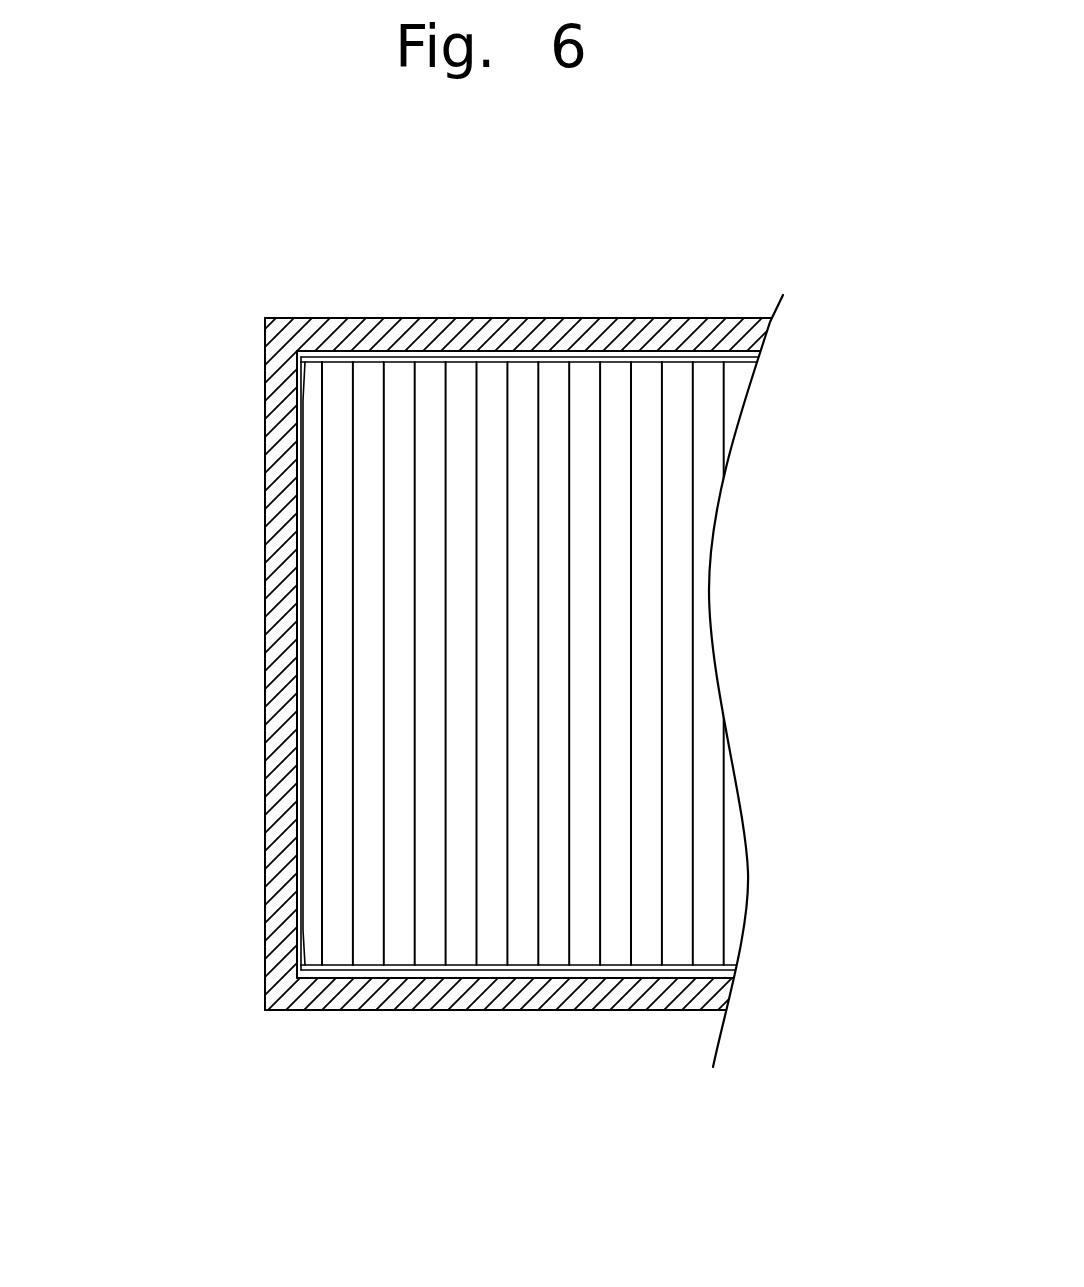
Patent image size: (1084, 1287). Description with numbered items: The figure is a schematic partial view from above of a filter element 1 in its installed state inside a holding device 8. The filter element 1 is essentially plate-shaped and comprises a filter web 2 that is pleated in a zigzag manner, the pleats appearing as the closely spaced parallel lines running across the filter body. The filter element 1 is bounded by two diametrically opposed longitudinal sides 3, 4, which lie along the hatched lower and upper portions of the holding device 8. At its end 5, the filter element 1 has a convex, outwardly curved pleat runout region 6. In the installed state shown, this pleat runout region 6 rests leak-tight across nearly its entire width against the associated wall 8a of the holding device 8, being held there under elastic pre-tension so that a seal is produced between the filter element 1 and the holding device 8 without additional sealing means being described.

The filter element 1 is at (798, 663).
The filter web 2 is at (585, 445).
The longitudinal side 3 is at (490, 973).
The longitudinal side 4 is at (500, 360).
The end 5 is at (296, 834).
The pleat runout region 6 is at (292, 675).
The holding device 8 is at (640, 995).
The wall 8a is at (278, 514).